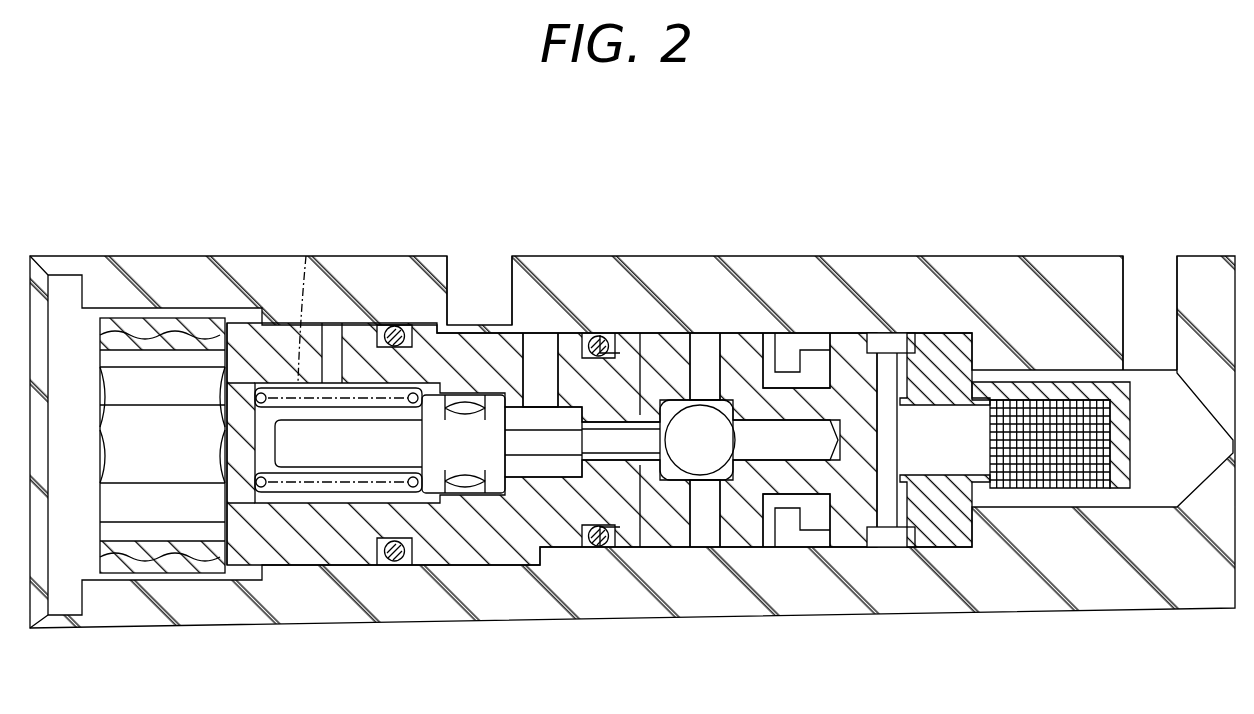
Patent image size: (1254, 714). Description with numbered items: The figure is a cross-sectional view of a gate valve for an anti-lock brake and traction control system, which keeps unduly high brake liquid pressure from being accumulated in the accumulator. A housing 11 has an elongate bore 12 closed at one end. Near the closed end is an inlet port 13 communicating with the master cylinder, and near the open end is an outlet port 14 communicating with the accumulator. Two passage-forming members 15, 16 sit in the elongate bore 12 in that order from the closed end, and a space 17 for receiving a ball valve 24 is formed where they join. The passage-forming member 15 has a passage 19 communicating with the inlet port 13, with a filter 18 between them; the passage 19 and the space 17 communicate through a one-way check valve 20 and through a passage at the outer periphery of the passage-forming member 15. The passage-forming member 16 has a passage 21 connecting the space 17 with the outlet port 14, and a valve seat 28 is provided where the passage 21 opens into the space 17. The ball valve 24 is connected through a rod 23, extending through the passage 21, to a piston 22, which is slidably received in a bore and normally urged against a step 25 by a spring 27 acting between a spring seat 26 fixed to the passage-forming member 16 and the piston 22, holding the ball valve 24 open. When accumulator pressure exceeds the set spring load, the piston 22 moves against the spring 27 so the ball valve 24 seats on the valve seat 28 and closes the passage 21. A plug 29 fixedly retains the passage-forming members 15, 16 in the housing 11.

The housing 11 is at (100, 620).
The elongate bore 12 is at (655, 548).
The inlet port 13 is at (1150, 270).
The outlet port 14 is at (455, 280).
The passage-forming member 15 is at (852, 540).
The passage-forming member 16 is at (340, 550).
The space 17 is at (727, 475).
The filter 18 is at (1070, 452).
The passage 19 is at (892, 514).
The one-way check valve 20 is at (812, 347).
The passage 21 is at (550, 535).
The piston 22 is at (405, 457).
The rod 23 is at (542, 434).
The ball valve 24 is at (703, 467).
The step 25 is at (550, 474).
The spring seat 26 is at (245, 545).
The spring 27 is at (306, 256).
The valve seat 28 is at (657, 388).
The plug 29 is at (122, 326).